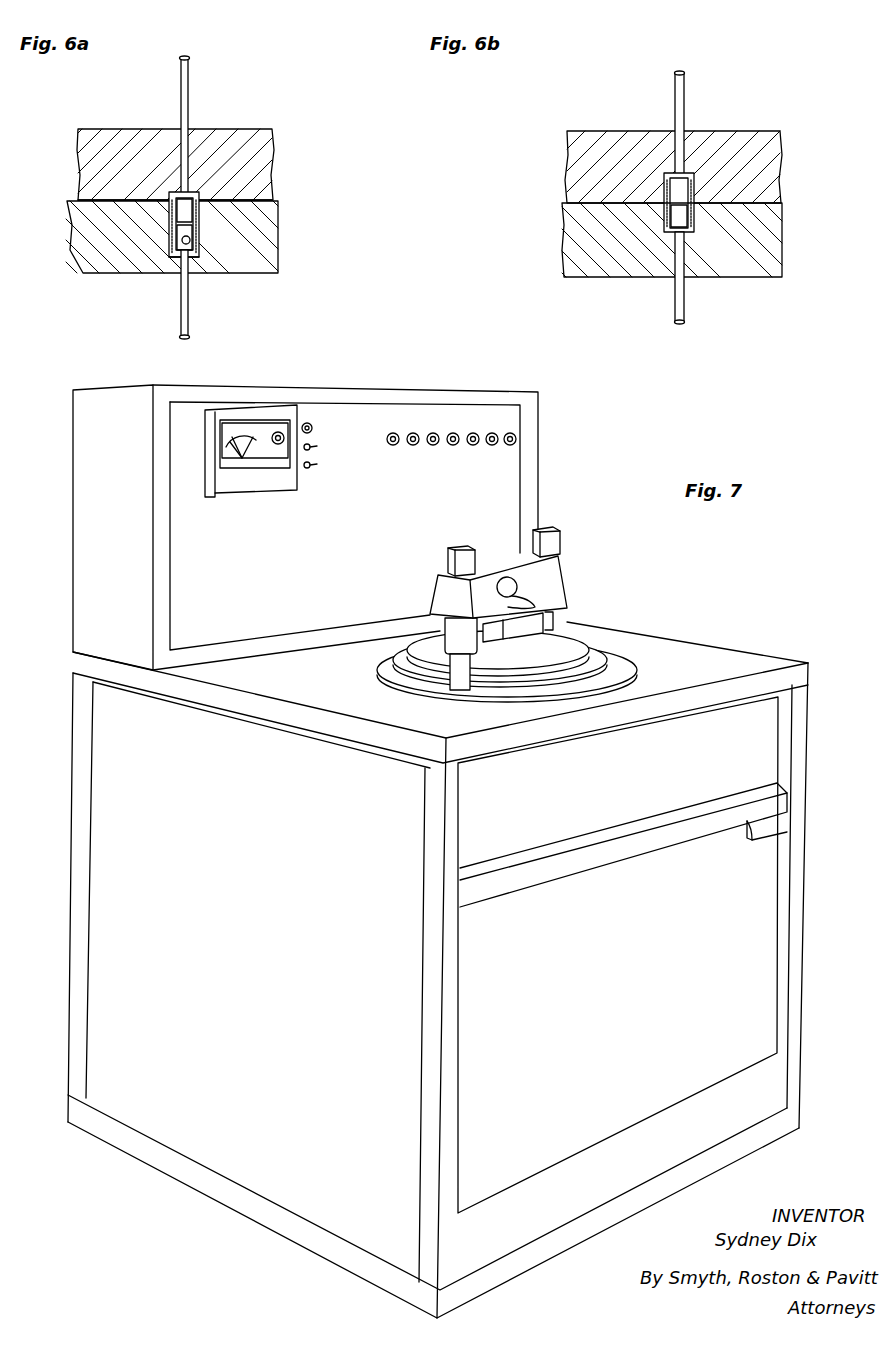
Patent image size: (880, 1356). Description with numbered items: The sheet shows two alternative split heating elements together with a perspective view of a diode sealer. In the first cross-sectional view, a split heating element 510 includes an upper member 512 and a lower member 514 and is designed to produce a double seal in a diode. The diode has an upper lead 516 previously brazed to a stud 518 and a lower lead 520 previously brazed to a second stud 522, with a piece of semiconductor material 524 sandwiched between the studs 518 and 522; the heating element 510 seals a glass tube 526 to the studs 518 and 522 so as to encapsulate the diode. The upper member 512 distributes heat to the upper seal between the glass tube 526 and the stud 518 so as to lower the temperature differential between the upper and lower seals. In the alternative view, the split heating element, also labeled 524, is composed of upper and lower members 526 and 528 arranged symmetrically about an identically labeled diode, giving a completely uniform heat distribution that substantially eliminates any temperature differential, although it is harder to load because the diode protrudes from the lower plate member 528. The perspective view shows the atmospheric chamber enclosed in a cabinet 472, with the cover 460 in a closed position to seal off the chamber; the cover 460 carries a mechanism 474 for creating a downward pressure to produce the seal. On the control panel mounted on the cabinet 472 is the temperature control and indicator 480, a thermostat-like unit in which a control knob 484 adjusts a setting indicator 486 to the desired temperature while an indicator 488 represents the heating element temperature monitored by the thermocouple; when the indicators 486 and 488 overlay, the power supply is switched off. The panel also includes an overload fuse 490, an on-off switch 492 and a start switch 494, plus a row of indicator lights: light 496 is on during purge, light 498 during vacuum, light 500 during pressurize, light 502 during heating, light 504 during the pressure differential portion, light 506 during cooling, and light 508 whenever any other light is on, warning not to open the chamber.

In FIG. 7, the cover 460 is at (570, 660).
In FIG. 7, the cabinet 472 is at (692, 662).
In FIG. 7, the mechanism for creating downward pressure 474 is at (540, 582).
In FIG. 7, the temperature control and indicator 480 is at (250, 485).
In FIG. 7, the control knob 484 is at (287, 433).
In FIG. 7, the setting indicator 486 is at (238, 433).
In FIG. 7, the indicator 488 is at (230, 447).
In FIG. 7, the overload fuse 490 is at (312, 425).
In FIG. 7, the on-off switch 492 is at (318, 445).
In FIG. 7, the start switch 494 is at (318, 463).
In FIG. 7, the indicator light 496 is at (393, 448).
In FIG. 7, the indicator light 498 is at (415, 433).
In FIG. 7, the indicator light 500 is at (435, 447).
In FIG. 7, the indicator light 502 is at (456, 433).
In FIG. 7, the indicator light 504 is at (473, 434).
In FIG. 7, the indicator light 506 is at (493, 447).
In FIG. 7, the indicator light 508 is at (516, 442).
In FIG. 6A, the split heating element 510 is at (257, 205).
In FIG. 6A, the upper member 512 is at (123, 142).
In FIG. 6A, the lower member 514 is at (103, 235).
In FIG. 6A, the upper lead 516 is at (188, 95).
In FIG. 6B, the upper lead 516 is at (684, 100).
In FIG. 6A, the stud 518 is at (187, 213).
In FIG. 6B, the stud 518 is at (680, 192).
In FIG. 6A, the lower lead 520 is at (188, 312).
In FIG. 6B, the lower lead 520 is at (673, 293).
In FIG. 6A, the second stud 522 is at (203, 253).
In FIG. 6A, the semiconductor material 524 is at (170, 247).
In FIG. 6B, the semiconductor material 524 is at (777, 200).
In FIG. 6A, the glass tube 526 is at (182, 253).
In FIG. 6B, the glass tube 526 is at (762, 160).
In FIG. 6B, the lower member 528 is at (763, 248).